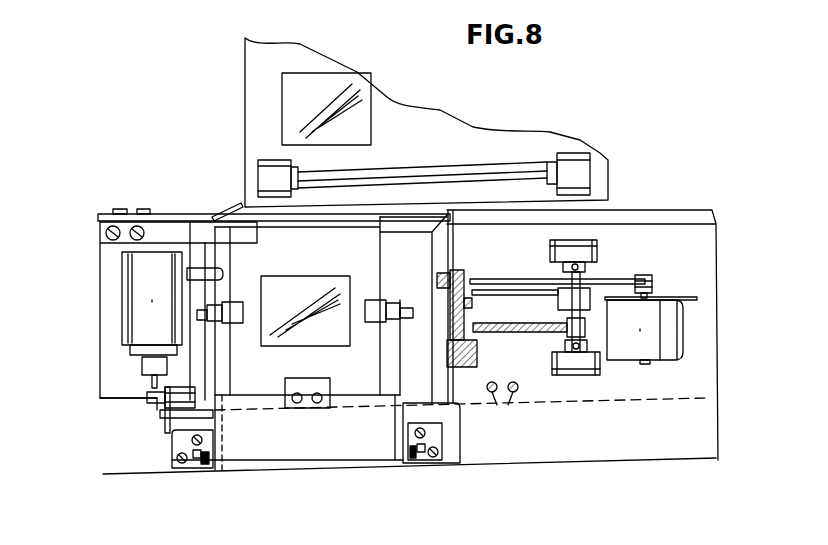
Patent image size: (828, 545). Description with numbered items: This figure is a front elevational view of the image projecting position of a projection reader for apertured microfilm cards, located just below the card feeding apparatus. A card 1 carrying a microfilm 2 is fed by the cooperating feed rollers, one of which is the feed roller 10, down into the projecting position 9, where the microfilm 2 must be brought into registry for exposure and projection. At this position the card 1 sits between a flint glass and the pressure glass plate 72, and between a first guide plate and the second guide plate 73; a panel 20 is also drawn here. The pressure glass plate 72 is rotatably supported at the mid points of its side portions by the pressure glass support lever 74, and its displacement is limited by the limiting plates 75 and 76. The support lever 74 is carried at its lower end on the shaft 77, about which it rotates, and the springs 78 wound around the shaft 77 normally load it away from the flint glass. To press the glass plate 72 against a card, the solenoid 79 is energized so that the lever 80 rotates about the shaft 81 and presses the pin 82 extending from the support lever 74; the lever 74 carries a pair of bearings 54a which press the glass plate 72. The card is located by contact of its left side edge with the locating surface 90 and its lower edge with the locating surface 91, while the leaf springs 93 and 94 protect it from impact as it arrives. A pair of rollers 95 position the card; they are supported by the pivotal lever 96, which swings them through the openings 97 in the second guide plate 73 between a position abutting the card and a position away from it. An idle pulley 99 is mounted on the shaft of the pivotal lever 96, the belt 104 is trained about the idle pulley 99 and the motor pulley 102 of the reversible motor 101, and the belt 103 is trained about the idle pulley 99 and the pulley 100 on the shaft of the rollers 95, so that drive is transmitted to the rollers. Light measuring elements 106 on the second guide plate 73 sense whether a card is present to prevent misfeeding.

The card 1 is at (433, 128).
The microfilm 2 is at (288, 100).
The projecting position 9 is at (303, 290).
The feed roller 10 is at (588, 170).
The panel 20 is at (413, 309).
The bearings 54a is at (378, 320).
The pressure glass plate 72 is at (218, 228).
The second guide plate 73 is at (670, 213).
The pressure glass support lever 74 is at (290, 460).
The limiting plate 75 is at (305, 405).
The limiting plate 76 is at (195, 245).
The shaft 77 is at (213, 462).
The springs 78 is at (203, 465).
The solenoid 79 is at (137, 278).
The lever 80 is at (160, 408).
The shaft 81 is at (107, 395).
The pin 82 is at (170, 440).
The locating surface 90 is at (220, 258).
The locating surface 91 is at (243, 410).
The leaf spring 93 is at (237, 208).
The leaf spring 94 is at (200, 268).
The rollers 95 is at (597, 246).
The pivotal lever 96 is at (530, 333).
The openings 97 is at (600, 238).
The idle pulley 99 is at (470, 280).
The pulley 100 is at (610, 270).
The motor 101 is at (683, 343).
The motor pulley 102 is at (653, 285).
The belt 103 is at (515, 297).
The belt 104 is at (517, 282).
The light measuring elements 106 is at (509, 405).